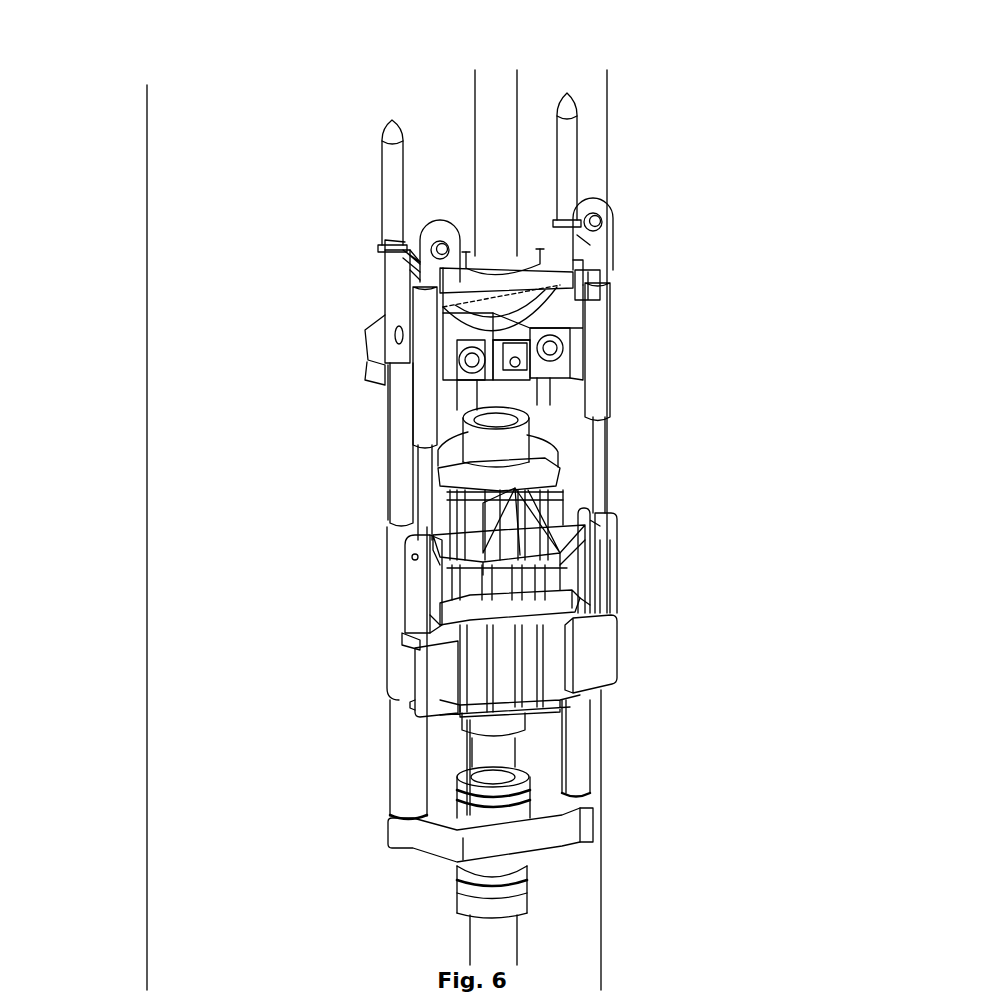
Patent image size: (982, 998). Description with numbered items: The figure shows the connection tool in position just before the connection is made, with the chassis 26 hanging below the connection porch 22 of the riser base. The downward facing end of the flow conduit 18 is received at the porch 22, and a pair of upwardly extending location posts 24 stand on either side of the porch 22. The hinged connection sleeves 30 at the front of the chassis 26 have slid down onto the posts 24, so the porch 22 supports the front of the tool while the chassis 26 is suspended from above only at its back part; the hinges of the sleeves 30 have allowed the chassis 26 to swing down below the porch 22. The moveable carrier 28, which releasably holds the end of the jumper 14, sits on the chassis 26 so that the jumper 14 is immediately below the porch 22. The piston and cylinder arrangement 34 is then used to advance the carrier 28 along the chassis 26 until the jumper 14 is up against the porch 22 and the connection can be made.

The jumper 14 is at (508, 440).
The flow conduit 18 is at (492, 117).
The connection porch 22 is at (527, 357).
The location posts 24 is at (392, 168).
The chassis 26 is at (403, 752).
The carrier 28 is at (432, 682).
The hinged connection sleeves 30 is at (377, 300).
The piston and cylinder arrangement 34 is at (608, 386).